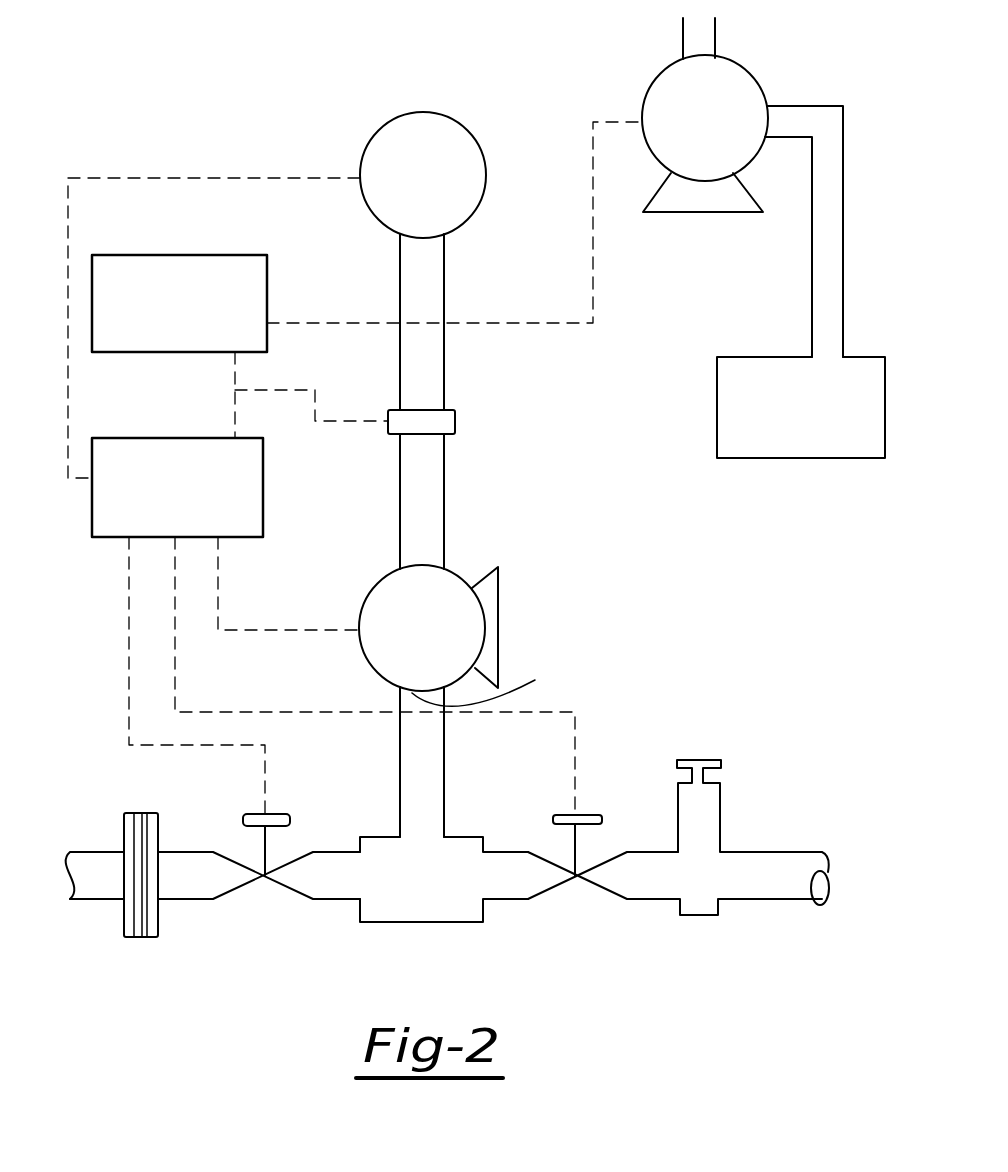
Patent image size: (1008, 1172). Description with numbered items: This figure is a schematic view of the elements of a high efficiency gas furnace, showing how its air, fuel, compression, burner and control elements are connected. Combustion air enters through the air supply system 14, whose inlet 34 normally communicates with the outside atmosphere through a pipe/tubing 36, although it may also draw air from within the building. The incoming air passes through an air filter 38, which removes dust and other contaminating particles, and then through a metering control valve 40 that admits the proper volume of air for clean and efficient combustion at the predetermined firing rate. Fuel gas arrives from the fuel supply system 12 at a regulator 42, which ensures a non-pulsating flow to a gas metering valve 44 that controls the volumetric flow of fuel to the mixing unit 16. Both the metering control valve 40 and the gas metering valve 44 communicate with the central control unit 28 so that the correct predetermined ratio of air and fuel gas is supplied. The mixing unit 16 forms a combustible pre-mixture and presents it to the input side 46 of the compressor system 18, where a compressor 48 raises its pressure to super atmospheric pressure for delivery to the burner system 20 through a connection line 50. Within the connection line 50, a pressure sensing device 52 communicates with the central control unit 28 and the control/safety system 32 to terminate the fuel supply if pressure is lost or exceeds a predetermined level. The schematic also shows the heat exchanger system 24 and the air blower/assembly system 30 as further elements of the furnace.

The fuel supply system 12 is at (753, 820).
The air supply system 14 is at (133, 878).
The mixing unit 16 is at (406, 900).
The compressor system 18 is at (408, 648).
The burner system 20 is at (409, 195).
The heat exchanger system 24 is at (786, 430).
The central control unit 28 is at (161, 510).
The air blower/assembly system 30 is at (684, 138).
The control/safety system 32 is at (164, 325).
The inlet 34 is at (76, 855).
The pipe/tubing 36 is at (93, 899).
The air filter 38 is at (141, 937).
The metering control valve 40 is at (266, 876).
The regulator 42 is at (695, 900).
The gas metering valve 44 is at (575, 878).
The input side 46 is at (491, 685).
The compressor 48 is at (498, 623).
The connection line 50 is at (422, 458).
The pressure sensing device 52 is at (440, 425).